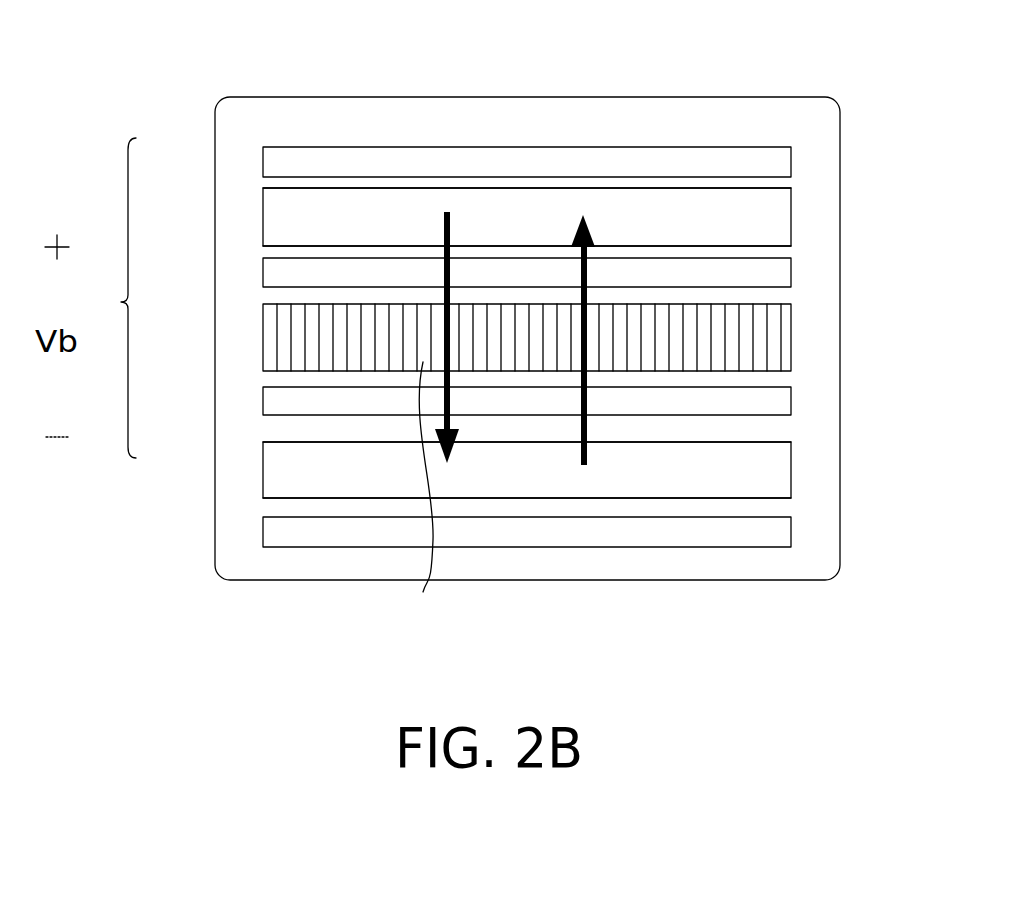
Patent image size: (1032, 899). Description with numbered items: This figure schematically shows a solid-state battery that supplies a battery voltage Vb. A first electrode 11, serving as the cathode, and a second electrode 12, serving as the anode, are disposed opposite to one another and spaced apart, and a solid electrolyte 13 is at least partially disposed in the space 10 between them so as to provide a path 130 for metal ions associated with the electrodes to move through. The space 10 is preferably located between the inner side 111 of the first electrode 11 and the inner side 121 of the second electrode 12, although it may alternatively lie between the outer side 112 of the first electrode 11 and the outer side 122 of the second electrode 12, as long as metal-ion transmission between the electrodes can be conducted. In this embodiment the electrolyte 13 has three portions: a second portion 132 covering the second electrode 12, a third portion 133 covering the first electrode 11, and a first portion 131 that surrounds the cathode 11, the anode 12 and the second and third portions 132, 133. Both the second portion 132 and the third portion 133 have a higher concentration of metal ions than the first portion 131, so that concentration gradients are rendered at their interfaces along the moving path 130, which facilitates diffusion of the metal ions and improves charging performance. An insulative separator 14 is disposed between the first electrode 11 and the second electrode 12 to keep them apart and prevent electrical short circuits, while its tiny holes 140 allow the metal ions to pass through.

The space 10 is at (377, 313).
The first electrode 11 is at (791, 218).
The inner side of the first electrode 111 is at (770, 245).
The outer side of the first electrode 112 is at (770, 188).
The second electrode 12 is at (791, 468).
The inner side of the second electrode 121 is at (757, 440).
The outer side of the second electrode 122 is at (757, 498).
The solid electrolyte 13 is at (112, 298).
The first portion 131 is at (273, 136).
The second portion 132 is at (263, 397).
The third portion 133 is at (263, 162).
The separator 14 is at (791, 339).
The path 130 is at (583, 215).
The tiny holes 140 is at (425, 498).